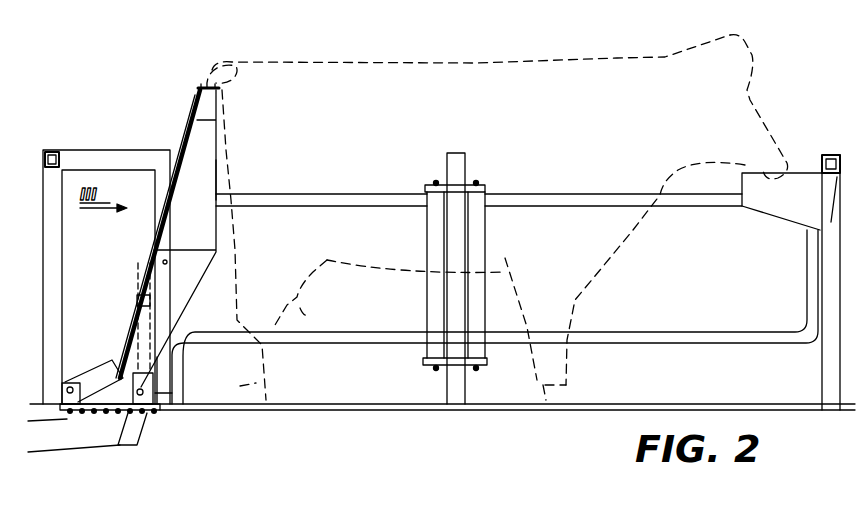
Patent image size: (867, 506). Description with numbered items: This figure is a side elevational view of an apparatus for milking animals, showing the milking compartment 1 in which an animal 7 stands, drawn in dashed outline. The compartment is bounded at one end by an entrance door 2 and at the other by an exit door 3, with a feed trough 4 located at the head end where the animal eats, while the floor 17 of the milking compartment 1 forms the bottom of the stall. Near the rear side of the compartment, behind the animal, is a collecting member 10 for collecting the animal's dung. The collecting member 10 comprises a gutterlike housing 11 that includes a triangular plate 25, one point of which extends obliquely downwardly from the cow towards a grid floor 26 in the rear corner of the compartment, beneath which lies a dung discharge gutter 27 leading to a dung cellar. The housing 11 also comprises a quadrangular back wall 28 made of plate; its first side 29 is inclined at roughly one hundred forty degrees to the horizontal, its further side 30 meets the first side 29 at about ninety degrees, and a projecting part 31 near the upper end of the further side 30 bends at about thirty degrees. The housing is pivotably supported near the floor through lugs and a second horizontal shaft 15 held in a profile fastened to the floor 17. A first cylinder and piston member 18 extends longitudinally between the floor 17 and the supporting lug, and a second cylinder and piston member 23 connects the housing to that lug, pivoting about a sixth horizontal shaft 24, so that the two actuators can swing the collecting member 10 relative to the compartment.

The milking compartment 1 is at (675, 271).
The entrance door 2 is at (378, 199).
The exit door 3 is at (616, 204).
The feed trough 4 is at (793, 212).
The animal 7 is at (651, 62).
The collecting member 10 is at (200, 221).
The gutterlike housing 11 is at (198, 226).
The second horizontal shaft 15 is at (144, 392).
The floor 17 is at (638, 404).
The first cylinder and piston member 18 is at (84, 377).
The second cylinder and piston member 23 is at (120, 325).
The sixth horizontal shaft 24 is at (154, 381).
The triangular plate 25 is at (187, 272).
The grid floor 26 is at (122, 445).
The dung discharge gutter 27 is at (72, 435).
The back wall 28 is at (182, 131).
The first side 29 is at (165, 262).
The further side 30 is at (203, 178).
The projecting part 31 is at (200, 86).